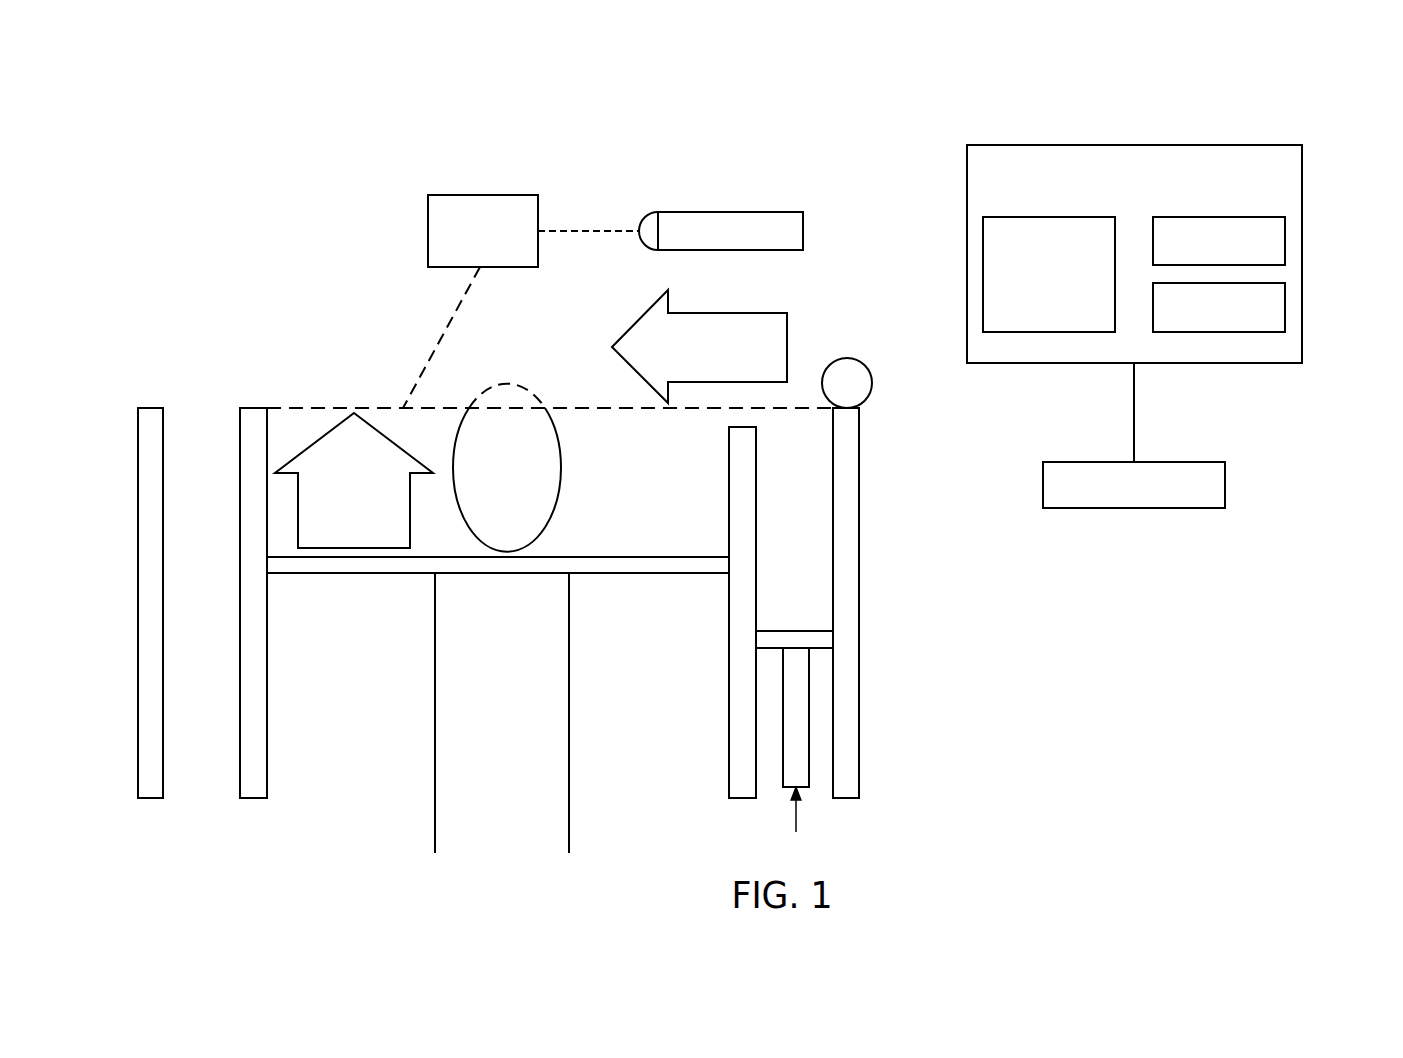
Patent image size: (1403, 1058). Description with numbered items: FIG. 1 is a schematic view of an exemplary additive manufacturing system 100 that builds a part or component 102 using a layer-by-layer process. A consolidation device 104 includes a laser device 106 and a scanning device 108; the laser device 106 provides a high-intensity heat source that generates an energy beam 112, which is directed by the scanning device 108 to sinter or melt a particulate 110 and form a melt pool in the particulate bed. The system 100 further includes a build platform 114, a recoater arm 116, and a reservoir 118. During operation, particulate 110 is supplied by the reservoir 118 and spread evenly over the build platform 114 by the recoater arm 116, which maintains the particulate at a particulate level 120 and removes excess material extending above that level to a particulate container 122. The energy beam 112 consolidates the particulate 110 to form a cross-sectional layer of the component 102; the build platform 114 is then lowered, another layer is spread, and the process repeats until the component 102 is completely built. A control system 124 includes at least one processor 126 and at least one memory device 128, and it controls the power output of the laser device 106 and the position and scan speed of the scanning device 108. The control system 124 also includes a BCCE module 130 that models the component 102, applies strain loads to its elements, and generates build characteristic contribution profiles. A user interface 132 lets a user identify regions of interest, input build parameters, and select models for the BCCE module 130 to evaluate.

The additive manufacturing system 100 is at (406, 82).
The component 102 is at (561, 466).
The consolidation device 104 is at (596, 122).
The laser device 106 is at (730, 212).
The scanning device 108 is at (485, 195).
The particulate 110 is at (573, 425).
The energy beam 112 is at (445, 330).
The build platform 114 is at (656, 557).
The recoater arm 116 is at (846, 358).
The reservoir 118 is at (805, 487).
The particulate level 120 is at (313, 408).
The particulate container 122 is at (205, 698).
The control system 124 is at (1133, 145).
The processor 126 is at (1228, 332).
The memory device 128 is at (1290, 234).
The BCCE module 130 is at (1047, 332).
The user interface 132 is at (1228, 482).